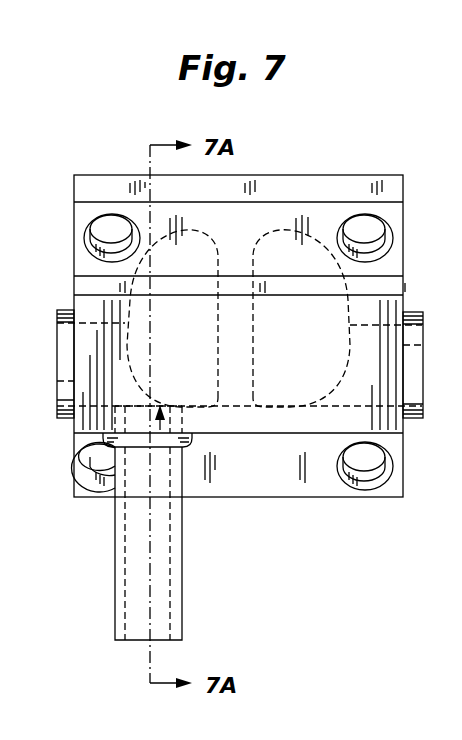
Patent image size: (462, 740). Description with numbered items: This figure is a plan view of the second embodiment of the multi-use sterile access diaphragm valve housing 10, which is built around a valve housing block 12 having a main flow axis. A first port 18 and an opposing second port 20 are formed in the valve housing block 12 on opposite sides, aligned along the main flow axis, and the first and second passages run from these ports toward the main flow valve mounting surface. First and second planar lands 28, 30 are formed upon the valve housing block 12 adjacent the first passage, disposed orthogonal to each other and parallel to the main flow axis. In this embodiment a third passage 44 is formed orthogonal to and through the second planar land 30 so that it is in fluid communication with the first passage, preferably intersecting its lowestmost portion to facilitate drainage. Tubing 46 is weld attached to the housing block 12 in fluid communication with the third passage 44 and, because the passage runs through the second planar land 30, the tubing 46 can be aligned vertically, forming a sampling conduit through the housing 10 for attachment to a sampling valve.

The diaphragm valve housing 10 is at (82, 152).
The valve housing block 12 is at (80, 184).
The first port 18 is at (58, 345).
The second port 20 is at (426, 338).
The first planar land 28 is at (262, 418).
The second planar land 30 is at (237, 430).
The third passage 44 is at (160, 415).
The tubing 46 is at (182, 596).